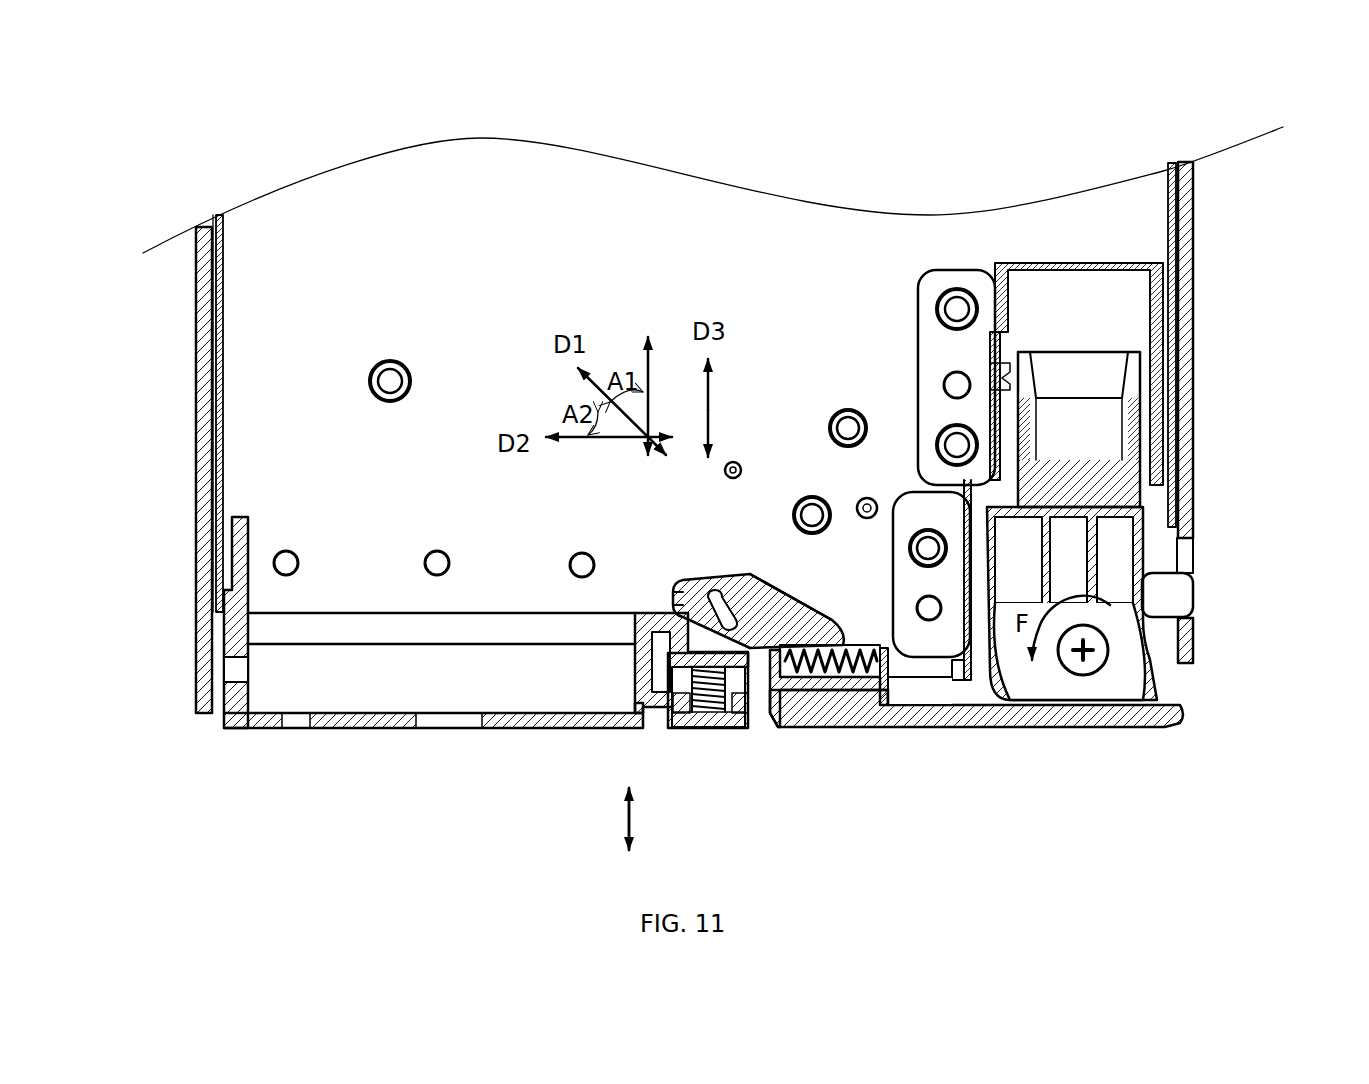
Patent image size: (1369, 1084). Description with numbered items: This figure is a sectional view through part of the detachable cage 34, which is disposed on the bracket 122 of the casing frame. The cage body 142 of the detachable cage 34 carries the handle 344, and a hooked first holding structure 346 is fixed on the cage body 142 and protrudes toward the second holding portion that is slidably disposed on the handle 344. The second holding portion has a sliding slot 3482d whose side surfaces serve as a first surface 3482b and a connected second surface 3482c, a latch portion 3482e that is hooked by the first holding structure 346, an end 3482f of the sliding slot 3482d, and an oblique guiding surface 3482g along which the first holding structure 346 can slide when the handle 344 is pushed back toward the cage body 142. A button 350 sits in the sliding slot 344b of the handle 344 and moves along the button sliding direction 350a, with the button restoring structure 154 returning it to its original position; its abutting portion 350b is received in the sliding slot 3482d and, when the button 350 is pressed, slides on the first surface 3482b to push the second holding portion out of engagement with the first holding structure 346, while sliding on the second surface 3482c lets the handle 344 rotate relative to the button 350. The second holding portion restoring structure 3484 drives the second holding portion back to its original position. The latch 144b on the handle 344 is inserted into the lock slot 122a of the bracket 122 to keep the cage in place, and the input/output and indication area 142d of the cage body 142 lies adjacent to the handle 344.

The cage body 142 is at (743, 213).
The bracket 122 is at (203, 388).
The lock slot 122a is at (1188, 548).
The latch 144b is at (1183, 595).
The detachable cage 34 is at (310, 803).
The first holding structure 346 is at (650, 615).
The first surface 3482b is at (680, 625).
The second surface 3482c is at (683, 598).
The sliding slot 3482d is at (668, 607).
The latch portion 3482e is at (672, 602).
The end of the sliding slot 3482f is at (714, 582).
The guiding surface 3482g is at (691, 580).
The button 350 is at (706, 737).
The button restoring structure 154 is at (687, 710).
The button sliding direction 350a is at (623, 570).
The abutting portion 350b is at (750, 603).
The handle 344 is at (997, 727).
The sliding slot 344b is at (762, 700).
The second holding portion restoring structure 3484 is at (827, 700).
The input/output and indication area 142d is at (508, 722).